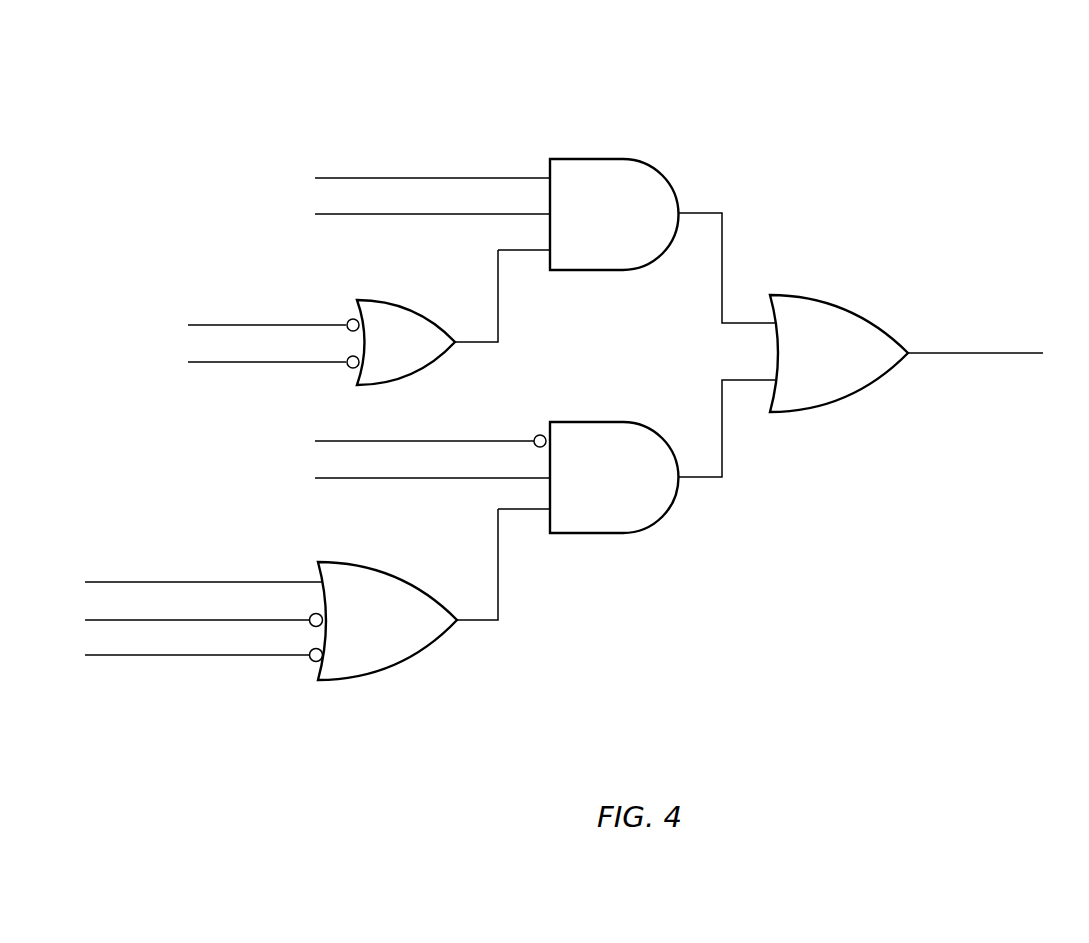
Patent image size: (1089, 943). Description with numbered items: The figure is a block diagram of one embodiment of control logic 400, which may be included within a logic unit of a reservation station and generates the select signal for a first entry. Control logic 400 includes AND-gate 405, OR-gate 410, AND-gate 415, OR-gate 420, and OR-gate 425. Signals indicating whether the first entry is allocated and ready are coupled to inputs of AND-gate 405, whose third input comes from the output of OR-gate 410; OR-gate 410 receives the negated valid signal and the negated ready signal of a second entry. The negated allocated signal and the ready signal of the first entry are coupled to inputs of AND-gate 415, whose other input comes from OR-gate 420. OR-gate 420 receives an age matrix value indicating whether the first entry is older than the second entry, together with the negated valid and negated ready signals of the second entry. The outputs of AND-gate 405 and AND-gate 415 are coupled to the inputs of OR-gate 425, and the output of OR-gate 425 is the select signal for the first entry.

The control logic 400 is at (166, 109).
The AND-gate 405 is at (614, 214).
The OR-gate 410 is at (401, 342).
The AND-gate 415 is at (606, 477).
The OR-gate 420 is at (384, 621).
The OR-gate 425 is at (839, 353).